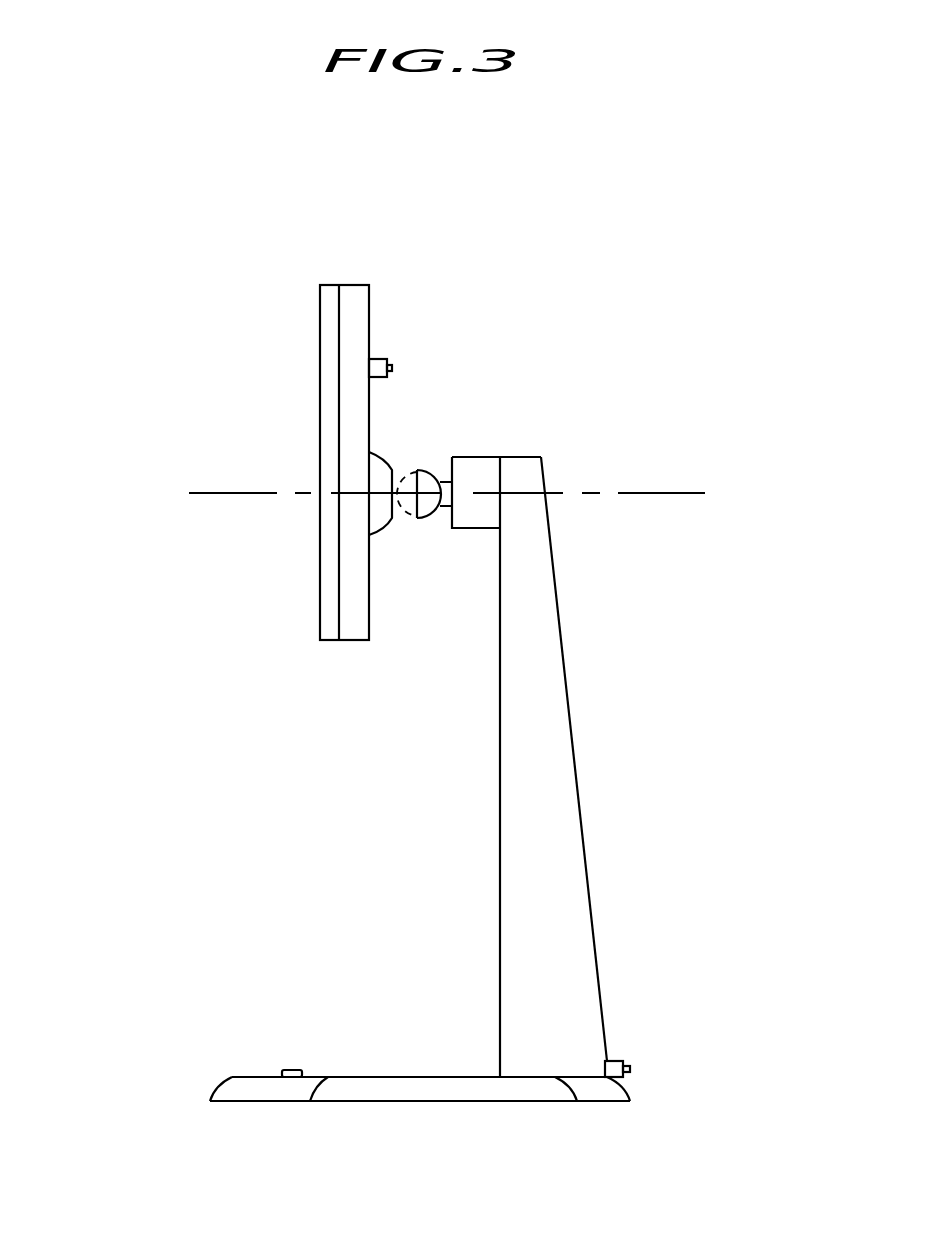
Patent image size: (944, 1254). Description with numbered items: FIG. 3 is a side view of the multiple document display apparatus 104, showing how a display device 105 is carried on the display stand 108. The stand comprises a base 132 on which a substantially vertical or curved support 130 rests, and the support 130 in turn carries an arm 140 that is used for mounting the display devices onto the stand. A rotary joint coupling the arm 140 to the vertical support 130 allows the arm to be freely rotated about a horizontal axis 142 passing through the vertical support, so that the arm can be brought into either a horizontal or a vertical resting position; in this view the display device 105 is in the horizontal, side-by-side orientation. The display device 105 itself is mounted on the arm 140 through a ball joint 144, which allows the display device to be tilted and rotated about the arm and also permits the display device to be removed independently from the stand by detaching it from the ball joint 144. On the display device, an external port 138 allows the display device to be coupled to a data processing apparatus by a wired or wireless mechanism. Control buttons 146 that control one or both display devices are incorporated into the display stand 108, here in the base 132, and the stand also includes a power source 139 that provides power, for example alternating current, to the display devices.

The multiple document display apparatus 104 is at (238, 318).
The display device 105 is at (352, 284).
The external port 138 is at (374, 359).
The arm 140 is at (473, 457).
The horizontal axis 142 is at (630, 493).
The ball joint 144 is at (425, 518).
The vertical support 130 is at (569, 720).
The display stand 108 is at (746, 456).
The control buttons 146 is at (290, 1070).
The power source 139 is at (617, 1058).
The base 132 is at (456, 1102).